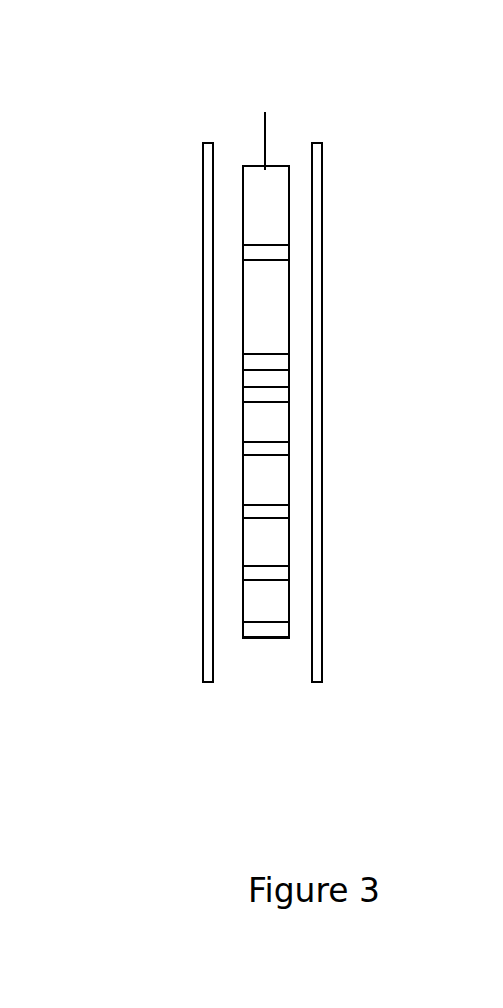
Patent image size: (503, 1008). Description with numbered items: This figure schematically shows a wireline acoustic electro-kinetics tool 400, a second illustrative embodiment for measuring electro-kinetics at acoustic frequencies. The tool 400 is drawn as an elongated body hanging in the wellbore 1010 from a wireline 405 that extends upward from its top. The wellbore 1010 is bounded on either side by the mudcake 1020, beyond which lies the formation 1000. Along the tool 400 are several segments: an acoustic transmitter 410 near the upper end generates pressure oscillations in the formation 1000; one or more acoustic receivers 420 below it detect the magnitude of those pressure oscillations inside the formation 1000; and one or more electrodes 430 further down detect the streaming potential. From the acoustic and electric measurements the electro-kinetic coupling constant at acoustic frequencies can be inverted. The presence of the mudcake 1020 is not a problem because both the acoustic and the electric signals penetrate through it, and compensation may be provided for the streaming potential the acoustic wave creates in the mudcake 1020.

The wireline acoustic electro-kinetics tool 400 is at (279, 122).
The wireline 405 is at (240, 132).
The acoustic transmitter 410 is at (222, 252).
The acoustic receivers 420 is at (222, 364).
The electrodes 430 is at (224, 457).
The formation 1000 is at (252, 366).
The wellbore 1010 is at (250, 423).
The mudcake 1020 is at (328, 152).